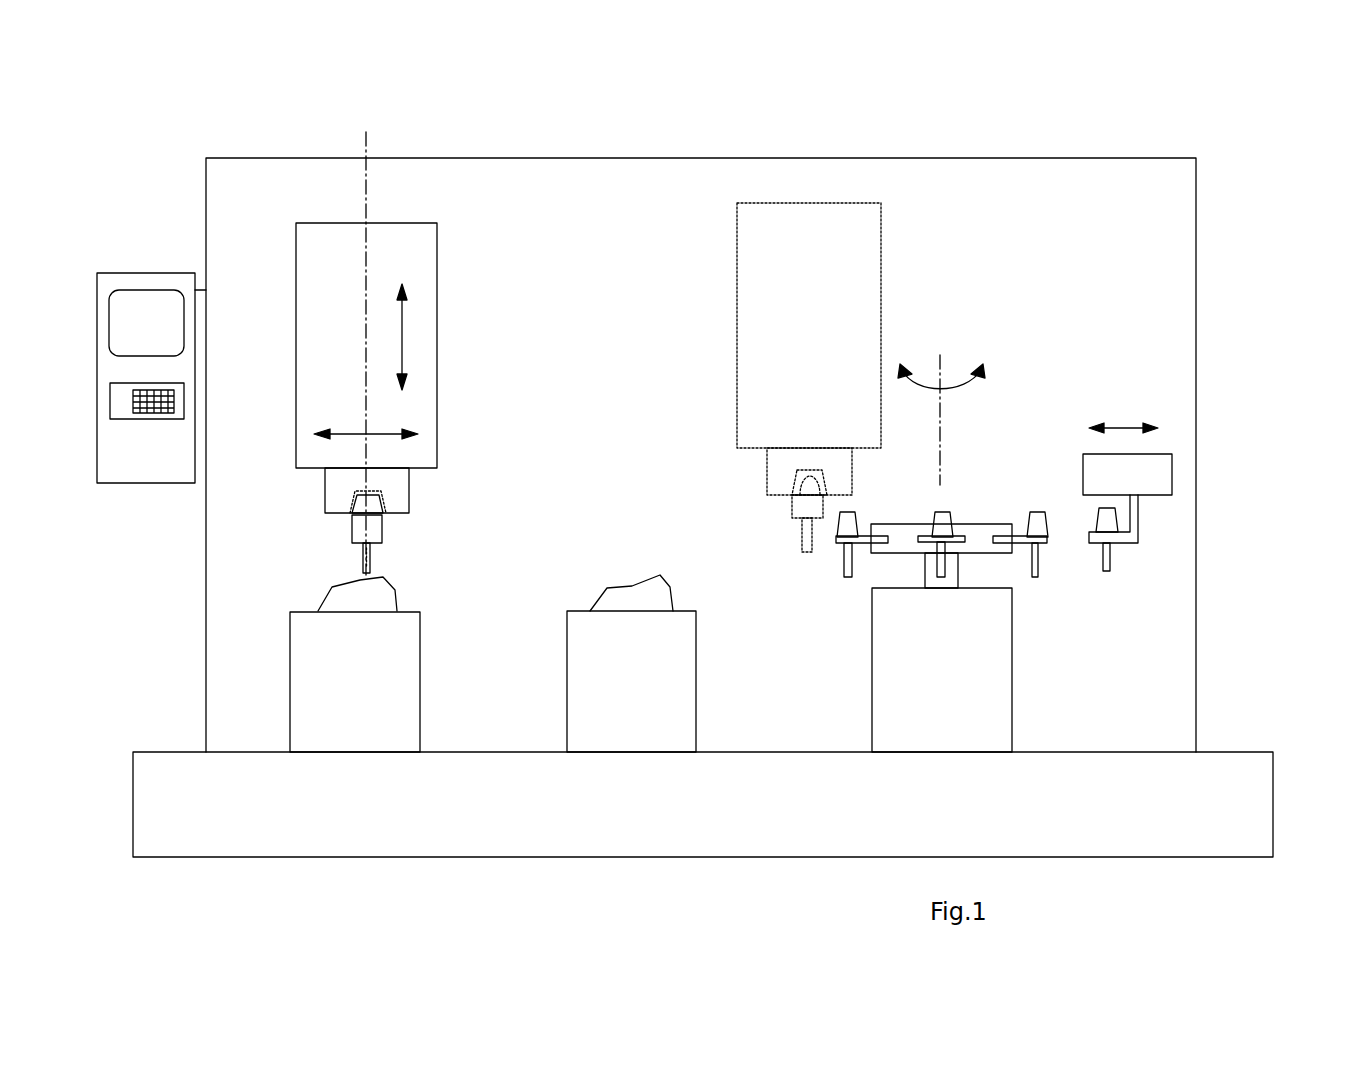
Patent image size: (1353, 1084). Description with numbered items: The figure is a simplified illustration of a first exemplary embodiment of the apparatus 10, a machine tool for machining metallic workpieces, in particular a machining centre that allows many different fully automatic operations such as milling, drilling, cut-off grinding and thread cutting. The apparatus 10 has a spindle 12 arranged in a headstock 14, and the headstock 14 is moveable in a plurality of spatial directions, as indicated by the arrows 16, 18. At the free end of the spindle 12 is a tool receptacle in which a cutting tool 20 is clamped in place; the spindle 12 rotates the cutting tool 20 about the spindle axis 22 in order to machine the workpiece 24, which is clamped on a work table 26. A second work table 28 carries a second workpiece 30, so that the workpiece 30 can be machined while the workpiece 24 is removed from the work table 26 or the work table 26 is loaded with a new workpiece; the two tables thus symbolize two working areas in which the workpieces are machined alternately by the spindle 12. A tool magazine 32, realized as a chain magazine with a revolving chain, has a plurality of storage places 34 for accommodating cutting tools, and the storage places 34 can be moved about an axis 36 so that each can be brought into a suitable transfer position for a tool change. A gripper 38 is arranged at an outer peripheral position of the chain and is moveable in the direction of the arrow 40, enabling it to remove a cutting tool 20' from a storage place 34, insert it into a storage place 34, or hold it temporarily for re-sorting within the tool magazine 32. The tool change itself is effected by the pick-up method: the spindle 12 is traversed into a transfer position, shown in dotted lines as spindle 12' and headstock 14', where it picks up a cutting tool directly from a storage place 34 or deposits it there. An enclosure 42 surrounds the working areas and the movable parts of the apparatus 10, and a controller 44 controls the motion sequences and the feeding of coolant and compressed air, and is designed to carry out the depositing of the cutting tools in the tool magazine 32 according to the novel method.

The apparatus 10 is at (1172, 136).
The spindle 12 is at (427, 491).
The spindle in transfer position 12' is at (751, 497).
The headstock 14 is at (441, 345).
The headstock in transfer position 14' is at (809, 249).
The arrow 16 is at (402, 330).
The arrow 18 is at (392, 428).
The cutting tool 20 is at (438, 553).
The cutting tool 20' is at (1212, 631).
The spindle axis 22 is at (366, 138).
The workpiece 24 is at (327, 592).
The work table 26 is at (290, 673).
The second work table 28 is at (585, 683).
The second workpiece 30 is at (638, 580).
The tool magazine 32 is at (840, 650).
The storage places 34 is at (840, 547).
The axis 36 is at (940, 363).
The gripper 38 is at (1140, 532).
The arrow 40 is at (1123, 427).
The enclosure 42 is at (1197, 238).
The controller 44 is at (133, 273).